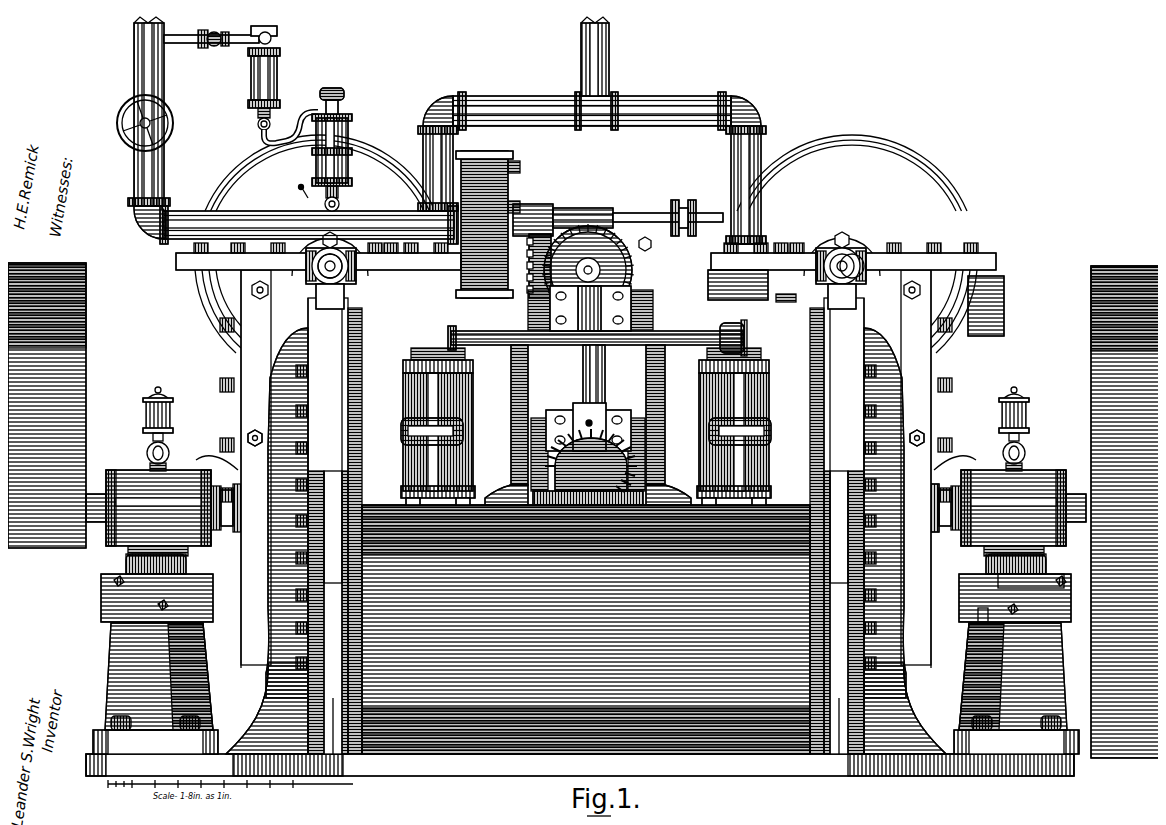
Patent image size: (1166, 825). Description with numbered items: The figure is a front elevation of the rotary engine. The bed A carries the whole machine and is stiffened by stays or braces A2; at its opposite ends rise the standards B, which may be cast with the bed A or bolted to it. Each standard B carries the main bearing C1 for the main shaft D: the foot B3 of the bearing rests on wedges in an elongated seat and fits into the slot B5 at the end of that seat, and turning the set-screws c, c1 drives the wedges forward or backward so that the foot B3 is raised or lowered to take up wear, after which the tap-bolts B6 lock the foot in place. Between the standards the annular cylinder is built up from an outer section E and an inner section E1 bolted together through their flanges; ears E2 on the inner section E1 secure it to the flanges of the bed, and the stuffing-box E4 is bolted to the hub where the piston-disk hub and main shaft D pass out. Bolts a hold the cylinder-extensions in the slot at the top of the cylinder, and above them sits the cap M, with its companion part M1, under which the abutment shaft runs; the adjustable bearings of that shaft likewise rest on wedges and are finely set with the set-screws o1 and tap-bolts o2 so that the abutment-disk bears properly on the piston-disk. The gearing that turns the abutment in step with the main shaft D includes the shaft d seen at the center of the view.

The bed A is at (950, 760).
The stays or braces A2 is at (265, 700).
The standards B is at (120, 680).
The foot of the main bearing B3 is at (1015, 578).
The slot B5 is at (975, 610).
The tap-bolts B6 is at (180, 560).
The main bearing C1 is at (586, 471).
The set-screw c1 is at (104, 575).
The set-screws c is at (160, 600).
The main shaft D is at (930, 480).
The outer section of the annular cylinder E is at (586, 512).
The inner section of the annular cylinder E1 is at (586, 317).
The ears E2 is at (586, 495).
The stuffing-box E4 is at (587, 449).
The cap M is at (586, 244).
The cylinder casing M1 is at (740, 292).
The bolts a is at (942, 424).
The set-screws o1 is at (786, 304).
The tap-bolts o2 is at (326, 302).
The gear shaft d is at (597, 364).